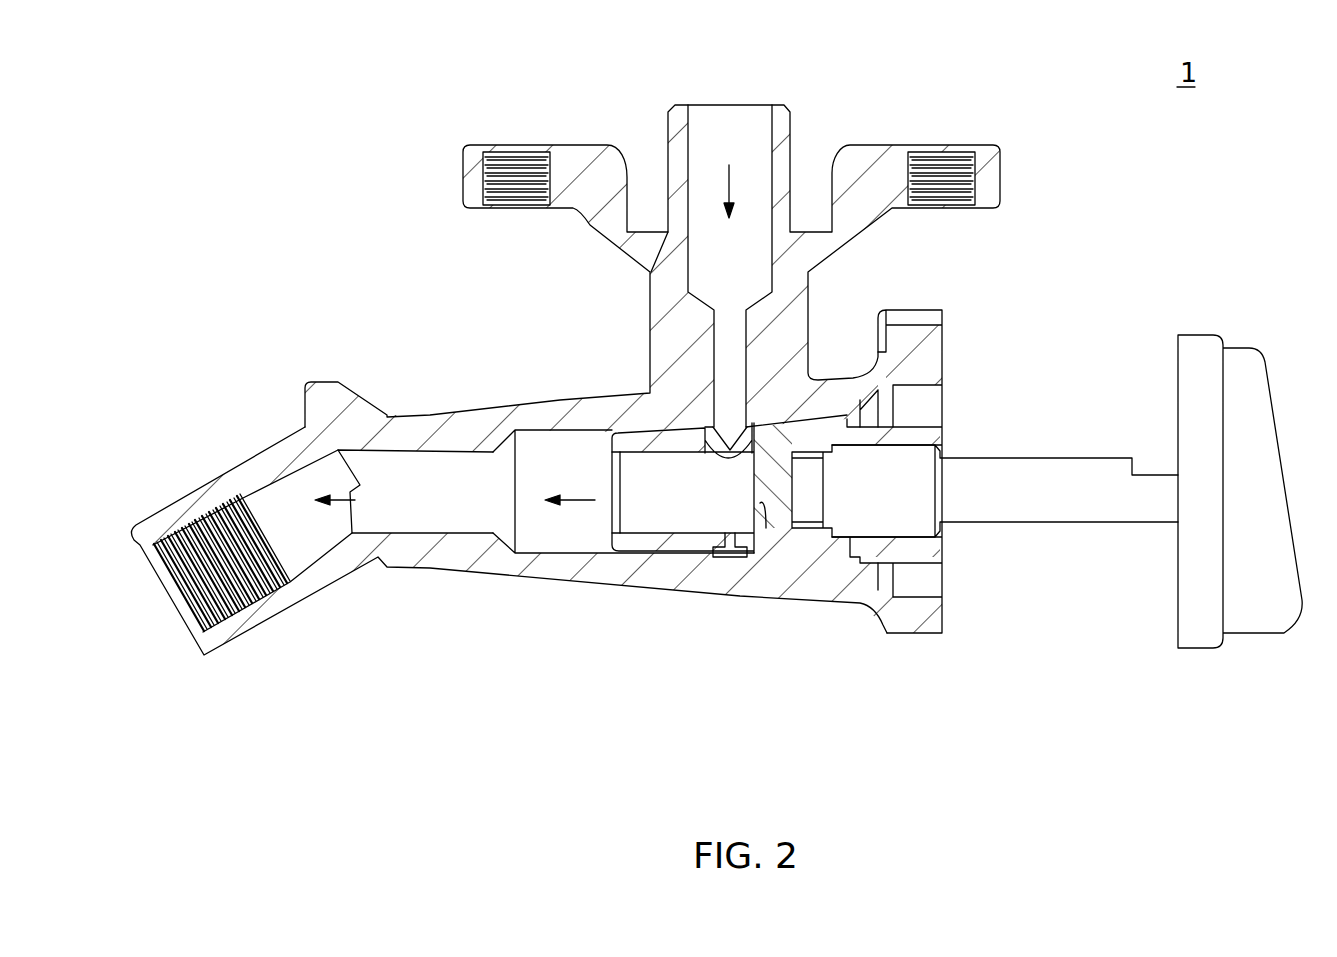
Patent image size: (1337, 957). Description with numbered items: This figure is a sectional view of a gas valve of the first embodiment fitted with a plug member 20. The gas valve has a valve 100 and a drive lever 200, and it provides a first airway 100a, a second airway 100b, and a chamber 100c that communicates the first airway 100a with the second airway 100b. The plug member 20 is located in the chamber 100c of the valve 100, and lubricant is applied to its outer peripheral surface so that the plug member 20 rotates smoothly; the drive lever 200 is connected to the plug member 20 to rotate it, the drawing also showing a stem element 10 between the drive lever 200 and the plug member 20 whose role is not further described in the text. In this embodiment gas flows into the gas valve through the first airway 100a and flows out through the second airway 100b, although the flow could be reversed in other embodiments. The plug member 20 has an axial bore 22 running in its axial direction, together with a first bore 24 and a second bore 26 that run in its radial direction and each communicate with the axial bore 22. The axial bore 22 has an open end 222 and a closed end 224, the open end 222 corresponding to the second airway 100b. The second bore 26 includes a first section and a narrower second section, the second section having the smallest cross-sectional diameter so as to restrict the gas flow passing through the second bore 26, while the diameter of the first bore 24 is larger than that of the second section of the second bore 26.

The valve 100 is at (548, 397).
The first airway 100a is at (723, 357).
The second airway 100b is at (277, 513).
The chamber 100c is at (540, 525).
The valve stem 10 is at (800, 553).
The plug member 20 is at (822, 550).
The axial bore 22 is at (645, 517).
The open end 222 is at (612, 498).
The first bore 24 is at (750, 437).
The closed end 224 is at (760, 533).
The second bore 26 is at (717, 550).
The drive lever 200 is at (1043, 523).